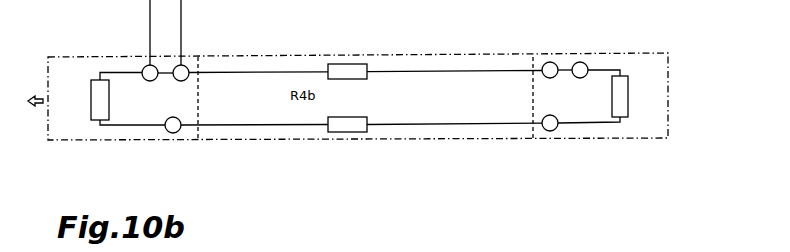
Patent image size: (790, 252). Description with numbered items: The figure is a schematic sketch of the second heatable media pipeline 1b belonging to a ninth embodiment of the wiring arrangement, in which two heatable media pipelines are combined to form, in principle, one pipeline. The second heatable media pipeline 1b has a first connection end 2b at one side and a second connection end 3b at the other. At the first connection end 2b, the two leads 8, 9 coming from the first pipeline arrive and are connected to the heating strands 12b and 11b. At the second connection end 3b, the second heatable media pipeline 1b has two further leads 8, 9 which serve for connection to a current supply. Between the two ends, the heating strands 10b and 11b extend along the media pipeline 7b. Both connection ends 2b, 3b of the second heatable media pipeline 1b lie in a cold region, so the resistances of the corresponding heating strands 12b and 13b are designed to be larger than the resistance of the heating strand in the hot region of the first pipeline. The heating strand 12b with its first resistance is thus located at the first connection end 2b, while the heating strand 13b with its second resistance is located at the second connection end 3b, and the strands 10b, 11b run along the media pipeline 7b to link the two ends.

The second heatable media pipeline 1b is at (503, 157).
The first connection end 2b is at (92, 142).
The second connection end 3b is at (622, 140).
The media pipeline 7b is at (352, 133).
The lead 8 is at (550, 62).
The lead 9 is at (580, 62).
The heating strand 10b is at (447, 125).
The heating strand 11b is at (243, 72).
The heating strand 12b is at (145, 128).
The heating strand 13b is at (617, 70).